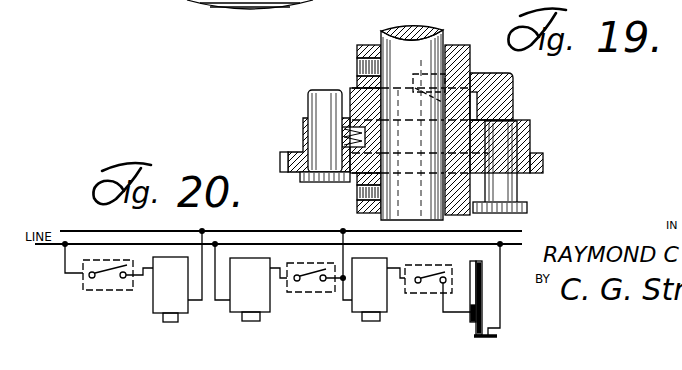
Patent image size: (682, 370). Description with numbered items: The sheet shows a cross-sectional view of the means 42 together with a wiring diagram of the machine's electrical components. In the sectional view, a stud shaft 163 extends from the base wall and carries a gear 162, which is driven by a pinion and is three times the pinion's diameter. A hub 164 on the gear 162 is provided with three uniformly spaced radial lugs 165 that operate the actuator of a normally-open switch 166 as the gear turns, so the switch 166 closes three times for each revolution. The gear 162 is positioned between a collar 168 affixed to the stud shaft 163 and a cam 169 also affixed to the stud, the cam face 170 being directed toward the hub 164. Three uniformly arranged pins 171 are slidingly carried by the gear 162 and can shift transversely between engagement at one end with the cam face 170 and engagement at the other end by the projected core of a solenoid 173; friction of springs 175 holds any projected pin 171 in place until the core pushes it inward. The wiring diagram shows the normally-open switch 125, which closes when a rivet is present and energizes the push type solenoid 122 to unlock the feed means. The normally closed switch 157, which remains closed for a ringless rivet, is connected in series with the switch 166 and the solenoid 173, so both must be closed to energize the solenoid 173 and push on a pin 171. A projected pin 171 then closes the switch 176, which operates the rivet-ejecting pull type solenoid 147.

In FIG. 19, the means 42 is at (295, 113).
In FIG. 19, the gear 162 is at (545, 167).
In FIG. 19, the stud shaft 163 is at (403, 50).
In FIG. 19, the hub 164 is at (305, 145).
In FIG. 19, the radial lugs 165 is at (530, 138).
In FIG. 19, the collar 168 is at (360, 204).
In FIG. 19, the cam 169 is at (508, 103).
In FIG. 19, the cam face 170 is at (450, 100).
In FIG. 19, the pins 171 is at (321, 161).
In FIG. 19, the springs 175 is at (354, 112).
In FIG. 20, the push type solenoid 122 is at (167, 297).
In FIG. 20, the switch 125 is at (111, 276).
In FIG. 20, the pull type solenoid 147 is at (240, 300).
In FIG. 20, the normally closed switch 157 is at (475, 324).
In FIG. 20, the normally-open switch 166 is at (432, 287).
In FIG. 20, the solenoid 173 is at (362, 300).
In FIG. 20, the switch 176 is at (310, 285).